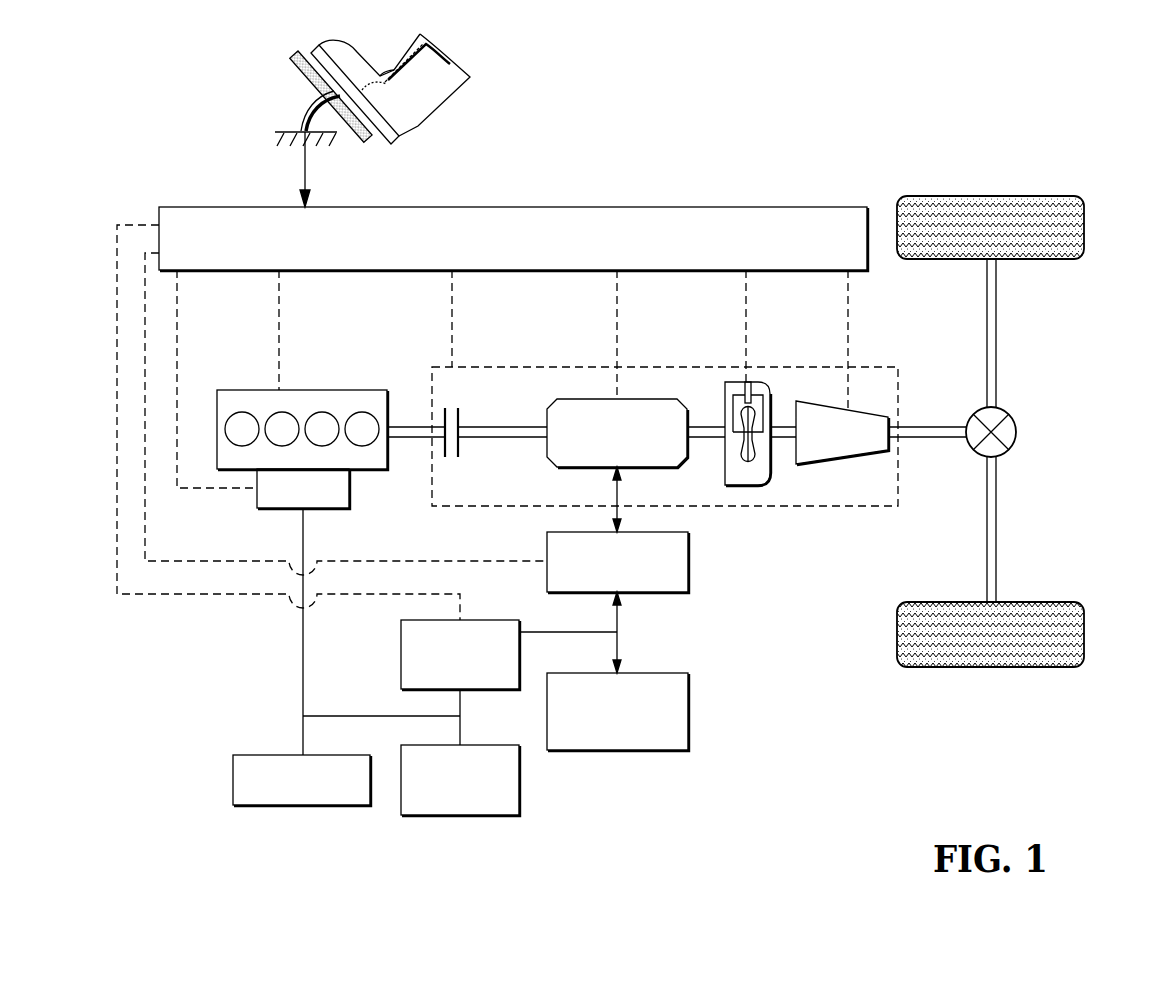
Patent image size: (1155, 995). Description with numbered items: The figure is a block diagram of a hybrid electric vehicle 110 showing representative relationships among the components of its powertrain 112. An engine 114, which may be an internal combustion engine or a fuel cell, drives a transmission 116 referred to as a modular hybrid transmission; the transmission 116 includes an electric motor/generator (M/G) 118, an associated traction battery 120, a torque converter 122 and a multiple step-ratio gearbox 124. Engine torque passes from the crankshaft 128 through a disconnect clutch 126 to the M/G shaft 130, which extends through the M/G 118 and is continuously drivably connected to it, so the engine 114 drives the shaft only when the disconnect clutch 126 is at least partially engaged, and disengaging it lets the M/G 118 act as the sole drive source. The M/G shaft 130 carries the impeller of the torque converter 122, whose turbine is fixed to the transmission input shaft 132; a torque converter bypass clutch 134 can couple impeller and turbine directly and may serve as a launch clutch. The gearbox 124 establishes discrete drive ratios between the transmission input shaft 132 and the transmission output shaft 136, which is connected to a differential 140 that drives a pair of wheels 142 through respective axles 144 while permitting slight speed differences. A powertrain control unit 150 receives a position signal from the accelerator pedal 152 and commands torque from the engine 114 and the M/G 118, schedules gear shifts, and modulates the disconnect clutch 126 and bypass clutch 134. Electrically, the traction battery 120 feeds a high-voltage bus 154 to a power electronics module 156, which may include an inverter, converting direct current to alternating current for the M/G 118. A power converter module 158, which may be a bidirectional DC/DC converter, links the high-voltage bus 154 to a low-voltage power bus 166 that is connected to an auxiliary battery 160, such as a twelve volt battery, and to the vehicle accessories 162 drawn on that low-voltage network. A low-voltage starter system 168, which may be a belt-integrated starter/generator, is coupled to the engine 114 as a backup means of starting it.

The hybrid electric vehicle 110 is at (783, 114).
The powertrain 112 is at (773, 655).
The engine 114 is at (258, 390).
The transmission 116 is at (708, 366).
The electric motor/generator (M/G) 118 is at (595, 399).
The traction battery 120 is at (688, 712).
The torque converter 122 is at (758, 486).
The gearbox 124 is at (832, 464).
The disconnect clutch 126 is at (456, 442).
The crankshaft 128 is at (422, 427).
The M/G shaft 130 is at (505, 427).
The transmission input shaft 132 is at (778, 427).
The torque converter bypass clutch 134 is at (747, 383).
The transmission output shaft 136 is at (920, 427).
The differential 140 is at (1020, 432).
The wheels 142 is at (992, 196).
The axles 144 is at (1000, 335).
The powertrain control unit (PCU) 150 is at (553, 206).
The accelerator pedal 152 is at (312, 86).
The high-voltage bus 154 is at (617, 644).
The power electronics module 156 is at (688, 562).
The power converter module 158 is at (401, 655).
The auxiliary battery 160 is at (519, 778).
The accessories 162 is at (233, 778).
The low-voltage power bus 166 is at (303, 663).
The low-voltage starter system 168 is at (349, 490).